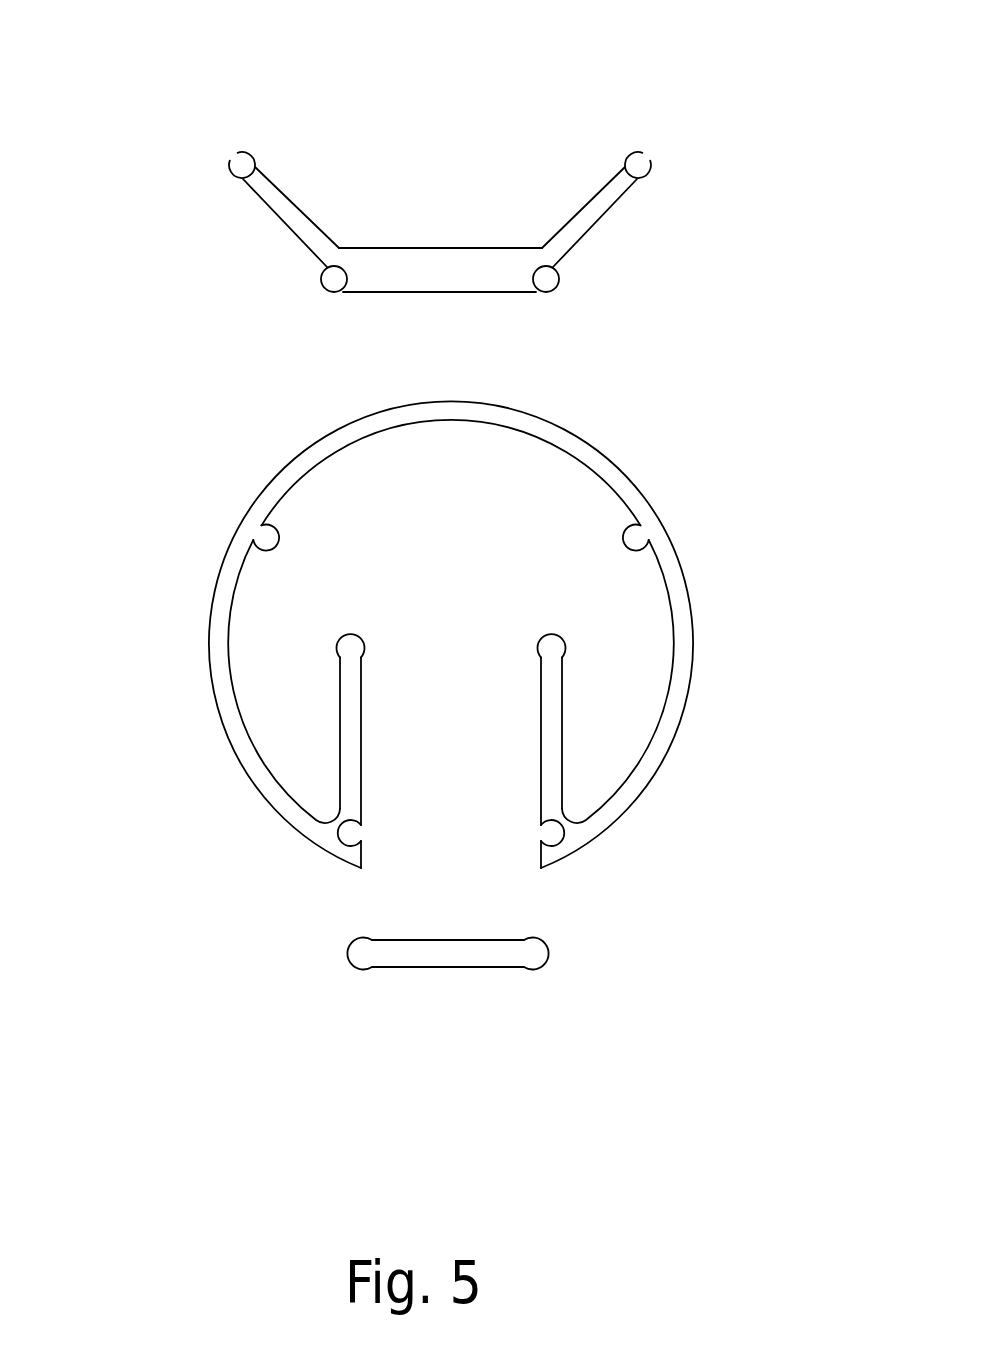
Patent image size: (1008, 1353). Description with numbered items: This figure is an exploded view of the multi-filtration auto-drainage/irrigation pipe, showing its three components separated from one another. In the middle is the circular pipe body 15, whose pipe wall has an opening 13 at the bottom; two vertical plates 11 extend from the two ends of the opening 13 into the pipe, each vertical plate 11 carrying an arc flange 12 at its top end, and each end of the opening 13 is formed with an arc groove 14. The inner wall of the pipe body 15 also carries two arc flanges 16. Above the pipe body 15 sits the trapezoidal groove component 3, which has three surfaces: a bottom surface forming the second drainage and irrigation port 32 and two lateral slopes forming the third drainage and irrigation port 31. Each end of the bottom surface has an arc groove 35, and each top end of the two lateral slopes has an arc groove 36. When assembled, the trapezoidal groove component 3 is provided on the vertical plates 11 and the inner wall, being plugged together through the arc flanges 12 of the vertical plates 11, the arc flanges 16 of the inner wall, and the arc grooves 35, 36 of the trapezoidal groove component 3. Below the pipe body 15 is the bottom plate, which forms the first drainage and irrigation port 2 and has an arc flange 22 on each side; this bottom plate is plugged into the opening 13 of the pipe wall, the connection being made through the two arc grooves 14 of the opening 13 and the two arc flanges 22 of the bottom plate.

The trapezoidal groove component 3 is at (450, 218).
The third drainage and irrigation port 31 is at (598, 208).
The second drainage and irrigation port 32 is at (438, 284).
The arc groove of the bottom surface of the trapezoidal groove component 35 is at (320, 278).
The arc groove of the two lateral slopes of the trapezoidal groove component 36 is at (240, 162).
The pipe body 15 is at (465, 674).
The arc flange of a pipe wall 16 is at (268, 543).
The vertical plate 11 is at (550, 764).
The arc flange of the vertical plate 12 is at (555, 642).
The opening 13 is at (443, 855).
The arc groove of the opening 14 is at (350, 844).
The first drainage and irrigation port 2 is at (466, 1025).
The arc flange of the bottom plate 22 is at (548, 953).